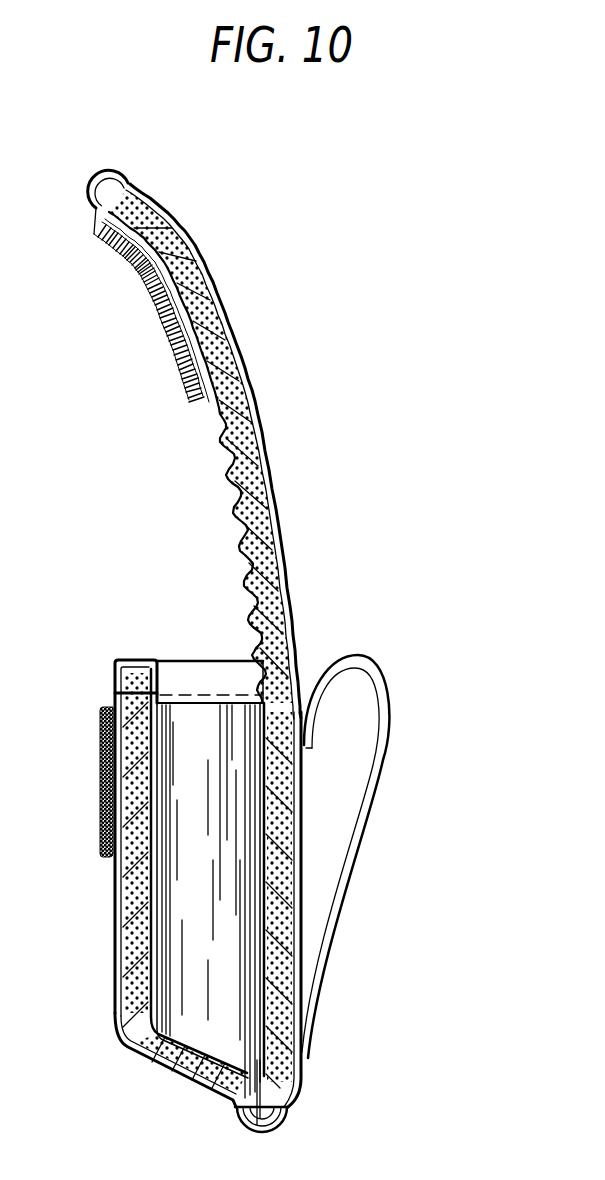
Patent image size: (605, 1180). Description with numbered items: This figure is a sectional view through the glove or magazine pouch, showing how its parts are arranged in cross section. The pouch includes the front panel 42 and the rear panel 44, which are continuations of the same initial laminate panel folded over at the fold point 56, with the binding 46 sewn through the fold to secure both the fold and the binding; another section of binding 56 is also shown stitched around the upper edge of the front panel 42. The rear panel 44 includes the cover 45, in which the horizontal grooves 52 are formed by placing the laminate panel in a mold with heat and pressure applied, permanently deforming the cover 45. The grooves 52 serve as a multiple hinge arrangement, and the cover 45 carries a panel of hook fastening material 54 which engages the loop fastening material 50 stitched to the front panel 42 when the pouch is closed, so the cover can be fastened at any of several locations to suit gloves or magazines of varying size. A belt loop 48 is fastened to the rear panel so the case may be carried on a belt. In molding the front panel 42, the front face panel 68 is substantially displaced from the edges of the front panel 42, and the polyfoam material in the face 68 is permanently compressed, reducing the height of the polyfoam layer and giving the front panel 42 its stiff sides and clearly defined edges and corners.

The front panel 42 is at (115, 960).
The rear panel 44 is at (306, 796).
The cover 45 is at (227, 327).
The binding 46 is at (292, 1112).
The belt loop 48 is at (361, 826).
The loop fastening material 50 is at (100, 782).
The horizontal grooves 52 is at (210, 430).
The hook fastening material 54 is at (133, 278).
The fold point 56 is at (176, 668).
The front face panel 68 is at (115, 878).